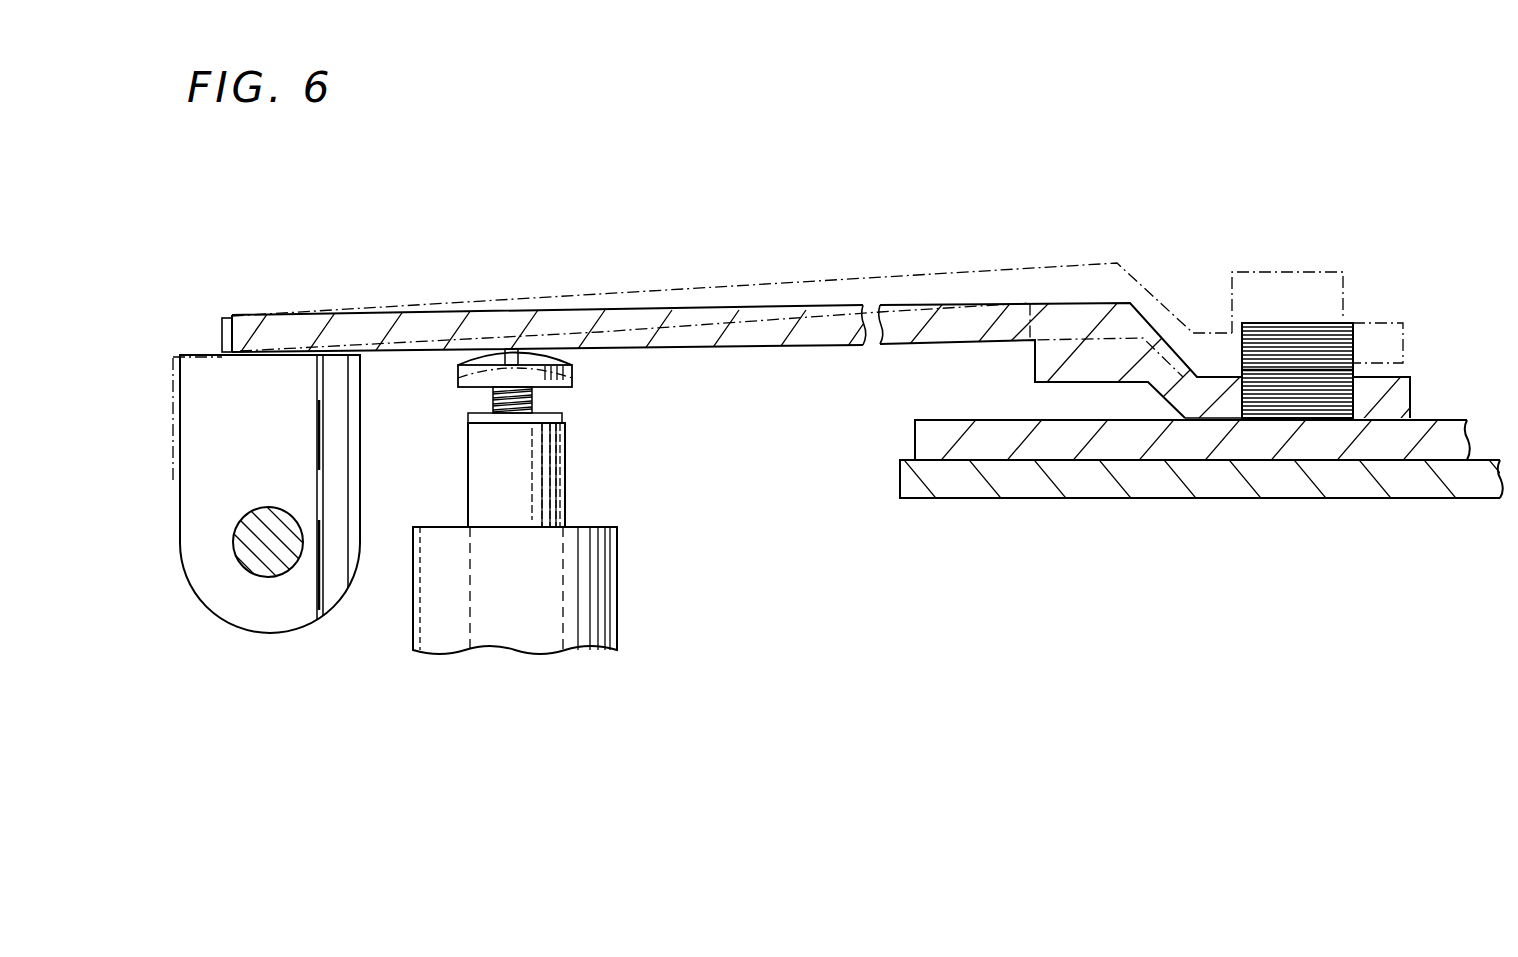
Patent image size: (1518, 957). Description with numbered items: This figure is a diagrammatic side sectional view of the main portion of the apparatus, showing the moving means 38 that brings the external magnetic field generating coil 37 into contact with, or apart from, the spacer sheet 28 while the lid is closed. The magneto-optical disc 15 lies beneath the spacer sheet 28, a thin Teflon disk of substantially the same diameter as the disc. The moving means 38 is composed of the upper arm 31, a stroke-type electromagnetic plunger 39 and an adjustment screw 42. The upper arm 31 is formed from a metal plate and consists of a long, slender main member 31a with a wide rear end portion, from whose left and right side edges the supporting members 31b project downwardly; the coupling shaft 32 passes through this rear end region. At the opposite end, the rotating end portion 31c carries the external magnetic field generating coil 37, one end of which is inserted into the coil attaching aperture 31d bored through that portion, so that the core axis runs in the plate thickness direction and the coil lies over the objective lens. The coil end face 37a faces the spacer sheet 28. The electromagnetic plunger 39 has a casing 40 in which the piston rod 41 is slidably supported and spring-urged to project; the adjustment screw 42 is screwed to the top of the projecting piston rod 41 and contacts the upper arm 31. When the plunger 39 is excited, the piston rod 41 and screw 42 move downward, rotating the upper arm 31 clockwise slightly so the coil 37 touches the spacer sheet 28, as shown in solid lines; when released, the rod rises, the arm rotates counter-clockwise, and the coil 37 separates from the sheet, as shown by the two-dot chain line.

The moving means 38 is at (388, 277).
The upper arm 31 is at (683, 292).
The main member 31a is at (745, 340).
The supporting members 31b is at (180, 555).
The rotating end portion 31c is at (1405, 345).
The external magnetic field generating coil attaching aperture 31d is at (1205, 440).
The coupling shaft 32 is at (272, 568).
The external magnetic field generating coil 37 is at (1316, 272).
The coil lower portion 37a is at (1340, 418).
The spacer sheet 28 is at (915, 440).
The magneto-optical disc 15 is at (900, 485).
The electromagnetic plunger 39 is at (620, 556).
The casing 40 is at (582, 537).
The piston rod 41 is at (560, 413).
The adjustment screw 42 is at (527, 350).